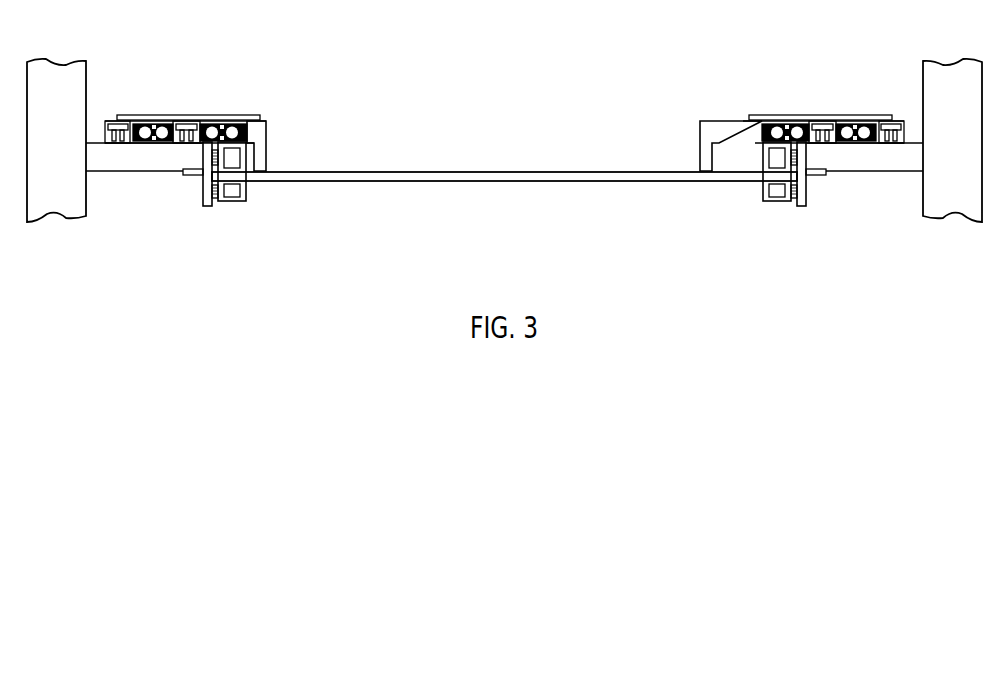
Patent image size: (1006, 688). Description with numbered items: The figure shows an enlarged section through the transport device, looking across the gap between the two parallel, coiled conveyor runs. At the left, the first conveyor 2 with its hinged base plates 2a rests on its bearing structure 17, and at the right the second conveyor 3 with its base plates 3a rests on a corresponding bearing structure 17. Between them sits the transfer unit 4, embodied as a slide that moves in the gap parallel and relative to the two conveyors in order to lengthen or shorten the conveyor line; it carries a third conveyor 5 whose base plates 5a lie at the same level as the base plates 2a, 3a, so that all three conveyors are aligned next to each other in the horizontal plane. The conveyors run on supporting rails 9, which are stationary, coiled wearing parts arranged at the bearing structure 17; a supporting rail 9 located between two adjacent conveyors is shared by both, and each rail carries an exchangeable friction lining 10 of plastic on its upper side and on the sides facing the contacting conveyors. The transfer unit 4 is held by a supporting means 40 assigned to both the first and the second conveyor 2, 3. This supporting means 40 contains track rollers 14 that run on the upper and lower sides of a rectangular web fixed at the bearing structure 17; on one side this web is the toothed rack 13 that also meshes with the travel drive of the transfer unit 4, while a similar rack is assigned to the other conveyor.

The first conveyor 2 is at (860, 143).
The base plates 2a is at (860, 115).
The second conveyor 3 is at (147, 143).
The base plates 3a is at (148, 115).
The transfer unit 4 is at (510, 182).
The third conveyor 5 is at (230, 122).
The base plates 5a is at (255, 115).
The supporting rails 9 is at (197, 122).
The friction lining 10 is at (187, 117).
The toothed rack 13 is at (193, 176).
The track rollers 14 is at (212, 207).
The bearing structure 17 is at (157, 163).
The supporting means 40 is at (273, 210).